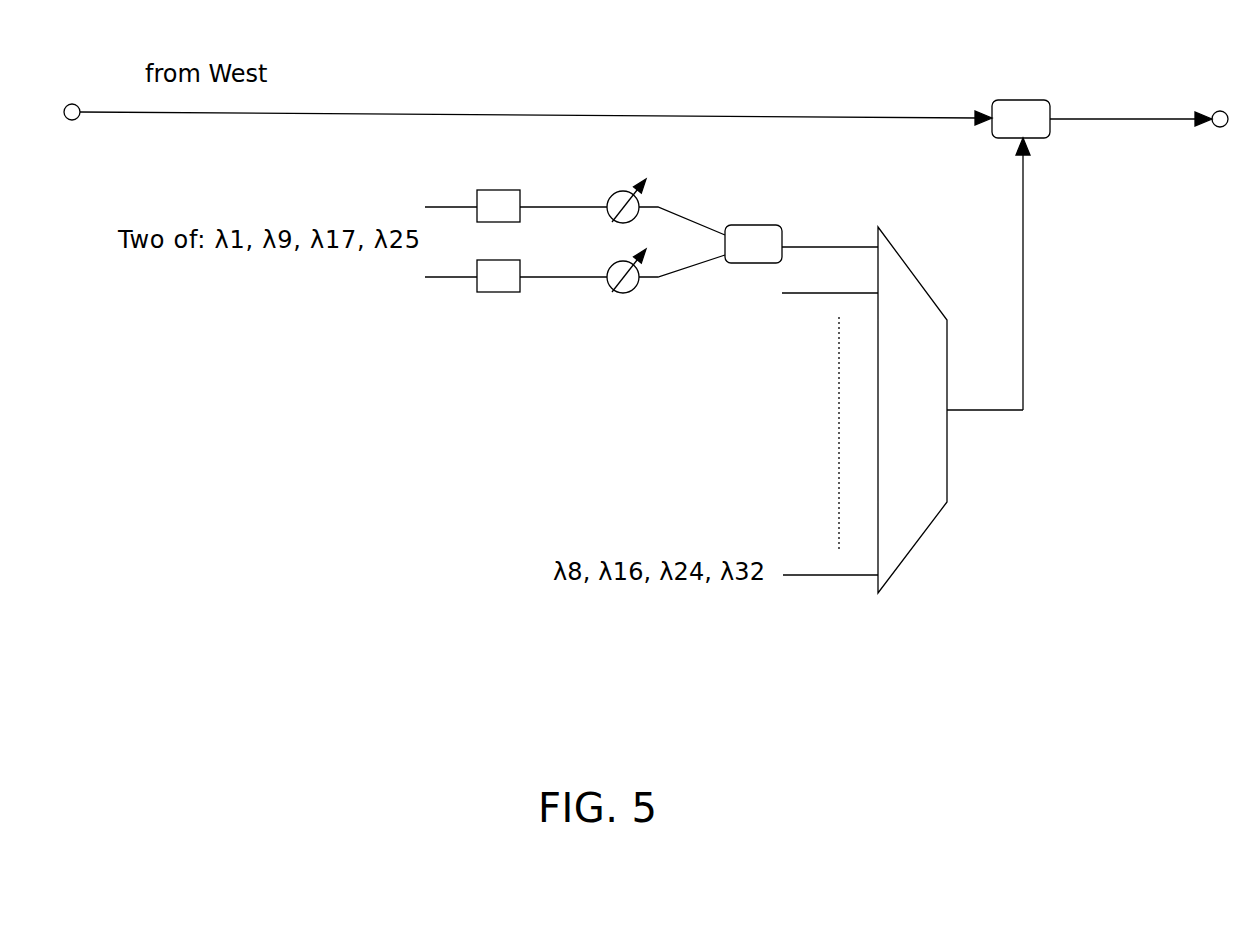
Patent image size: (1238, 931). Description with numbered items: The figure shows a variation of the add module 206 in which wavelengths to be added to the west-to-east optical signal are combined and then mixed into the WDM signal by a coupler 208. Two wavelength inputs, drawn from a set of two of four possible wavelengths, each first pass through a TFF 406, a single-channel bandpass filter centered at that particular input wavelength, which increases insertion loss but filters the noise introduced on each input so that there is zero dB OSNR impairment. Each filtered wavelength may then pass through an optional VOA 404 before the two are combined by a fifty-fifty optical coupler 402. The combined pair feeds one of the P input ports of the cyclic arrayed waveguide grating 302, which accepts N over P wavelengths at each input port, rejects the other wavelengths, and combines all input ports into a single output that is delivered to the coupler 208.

The add module 206 is at (907, 744).
The coupler 208 is at (1033, 112).
The cyclic arrayed waveguide grating 302 is at (912, 294).
The 50/50 optical coupler 402 is at (776, 262).
The VOA 404 is at (640, 196).
The TFF 406 is at (513, 205).